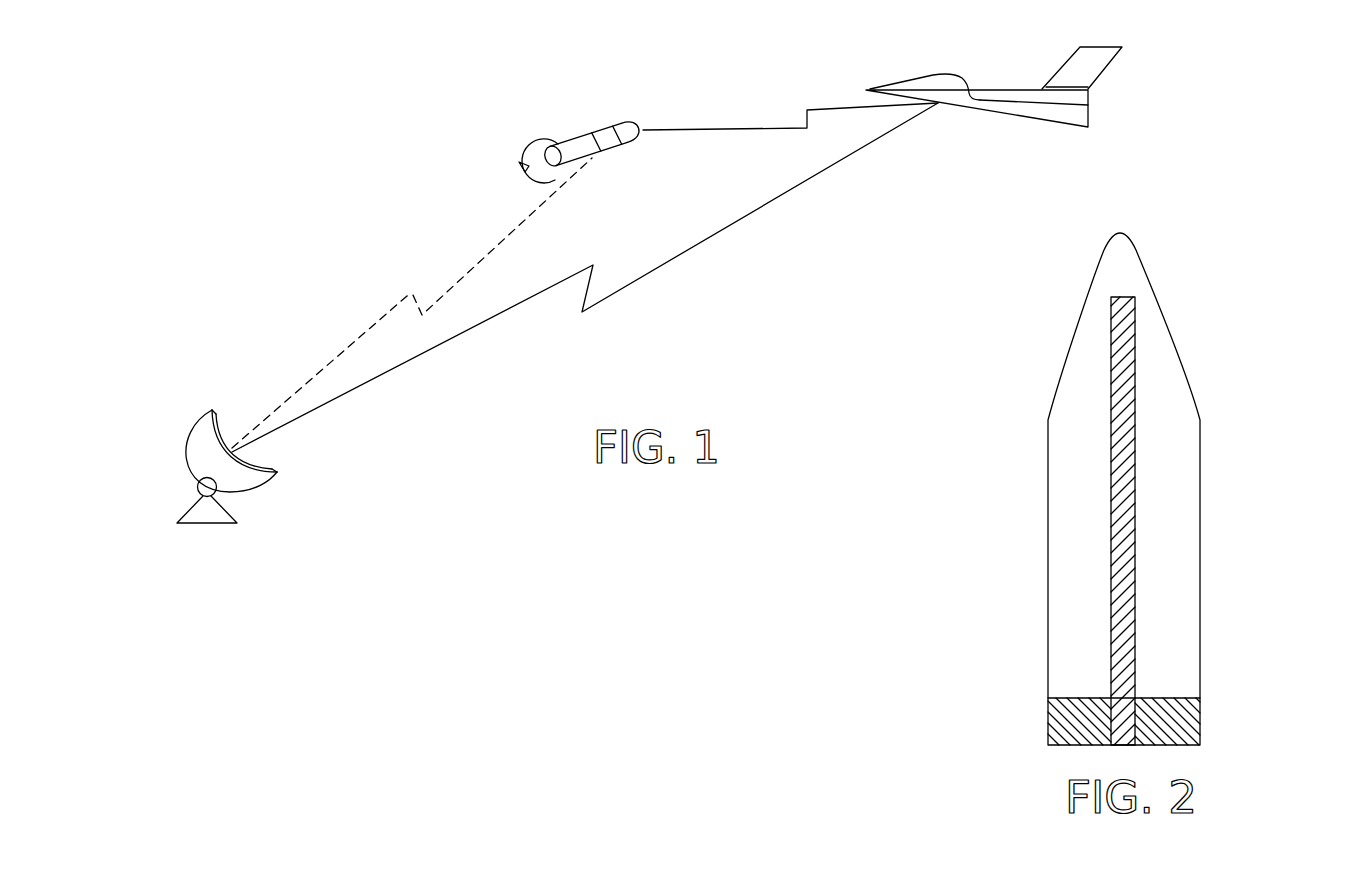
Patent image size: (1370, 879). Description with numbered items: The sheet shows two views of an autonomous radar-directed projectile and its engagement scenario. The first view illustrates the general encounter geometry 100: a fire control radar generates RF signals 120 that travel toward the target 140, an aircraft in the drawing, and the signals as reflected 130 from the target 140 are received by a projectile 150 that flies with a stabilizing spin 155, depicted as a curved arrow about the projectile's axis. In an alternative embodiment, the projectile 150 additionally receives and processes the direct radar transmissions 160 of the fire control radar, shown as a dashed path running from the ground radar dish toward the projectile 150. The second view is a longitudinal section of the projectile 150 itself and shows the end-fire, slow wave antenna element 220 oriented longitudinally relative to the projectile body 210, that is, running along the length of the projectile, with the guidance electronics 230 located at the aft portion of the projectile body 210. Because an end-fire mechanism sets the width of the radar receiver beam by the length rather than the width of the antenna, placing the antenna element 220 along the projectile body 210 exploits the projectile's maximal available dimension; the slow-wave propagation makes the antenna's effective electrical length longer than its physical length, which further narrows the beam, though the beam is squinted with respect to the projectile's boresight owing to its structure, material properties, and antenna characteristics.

In FIG. 1, the general encounter geometry 100 is at (403, 179).
In FIG. 1, the RF signals 120 is at (793, 190).
In FIG. 1, the reflected RF signals 130 is at (747, 127).
In FIG. 1, the target 140 is at (975, 110).
In FIG. 1, the projectile 150 is at (633, 120).
In FIG. 2, the projectile 150 is at (1007, 384).
In FIG. 1, the stabilizing spin 155 is at (537, 134).
In FIG. 1, the direct radar transmissions 160 is at (280, 410).
In FIG. 2, the projectile body 210 is at (1200, 452).
In FIG. 2, the end-fire, slow wave antenna element 220 is at (1135, 565).
In FIG. 2, the guidance electronics 230 is at (1048, 726).